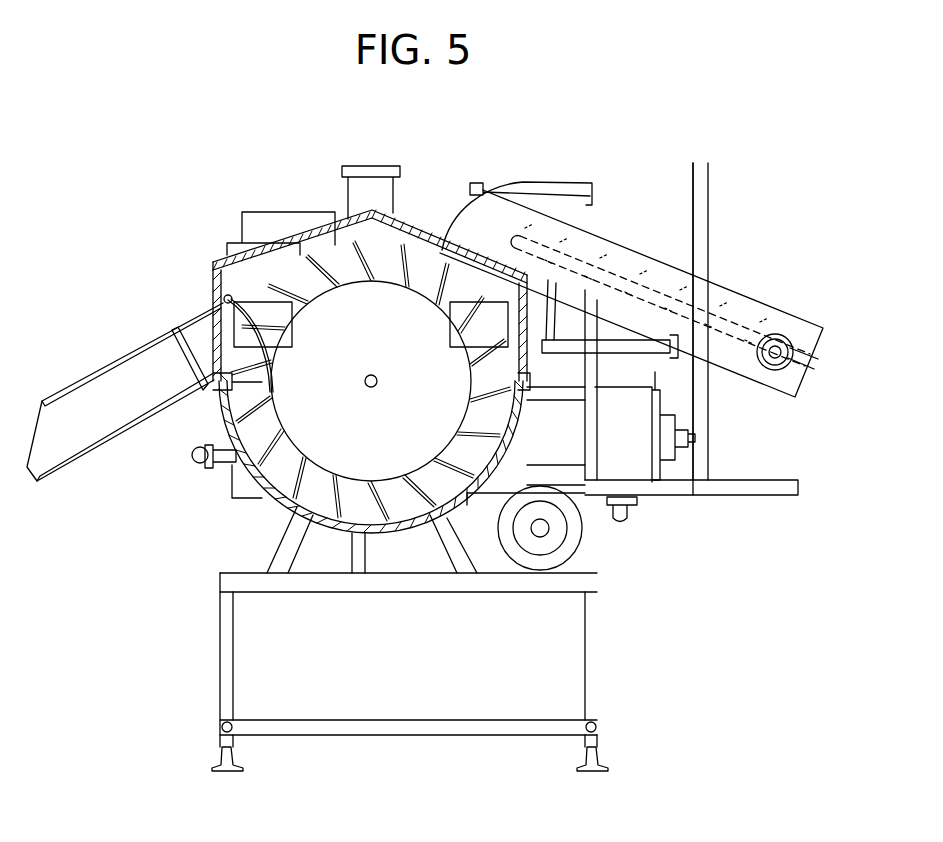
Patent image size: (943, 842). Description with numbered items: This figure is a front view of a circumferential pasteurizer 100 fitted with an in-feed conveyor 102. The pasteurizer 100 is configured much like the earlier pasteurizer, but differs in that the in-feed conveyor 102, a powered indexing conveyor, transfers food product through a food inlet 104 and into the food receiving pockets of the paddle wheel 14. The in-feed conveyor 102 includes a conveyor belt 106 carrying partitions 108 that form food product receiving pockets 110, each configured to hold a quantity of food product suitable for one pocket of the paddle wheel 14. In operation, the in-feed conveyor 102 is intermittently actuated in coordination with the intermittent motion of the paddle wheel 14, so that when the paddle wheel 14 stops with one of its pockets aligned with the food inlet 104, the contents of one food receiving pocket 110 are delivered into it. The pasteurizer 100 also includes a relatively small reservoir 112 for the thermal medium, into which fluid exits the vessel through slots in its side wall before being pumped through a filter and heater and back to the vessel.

The circumferential pasteurizer 100 is at (244, 158).
The paddle wheel 14 is at (360, 337).
The in-feed conveyor 102 is at (603, 228).
The food inlet 104 is at (486, 236).
The conveyor belt 106 is at (662, 300).
The partitions 108 is at (648, 268).
The food product receiving pockets 110 is at (770, 310).
The reservoir 112 is at (632, 467).